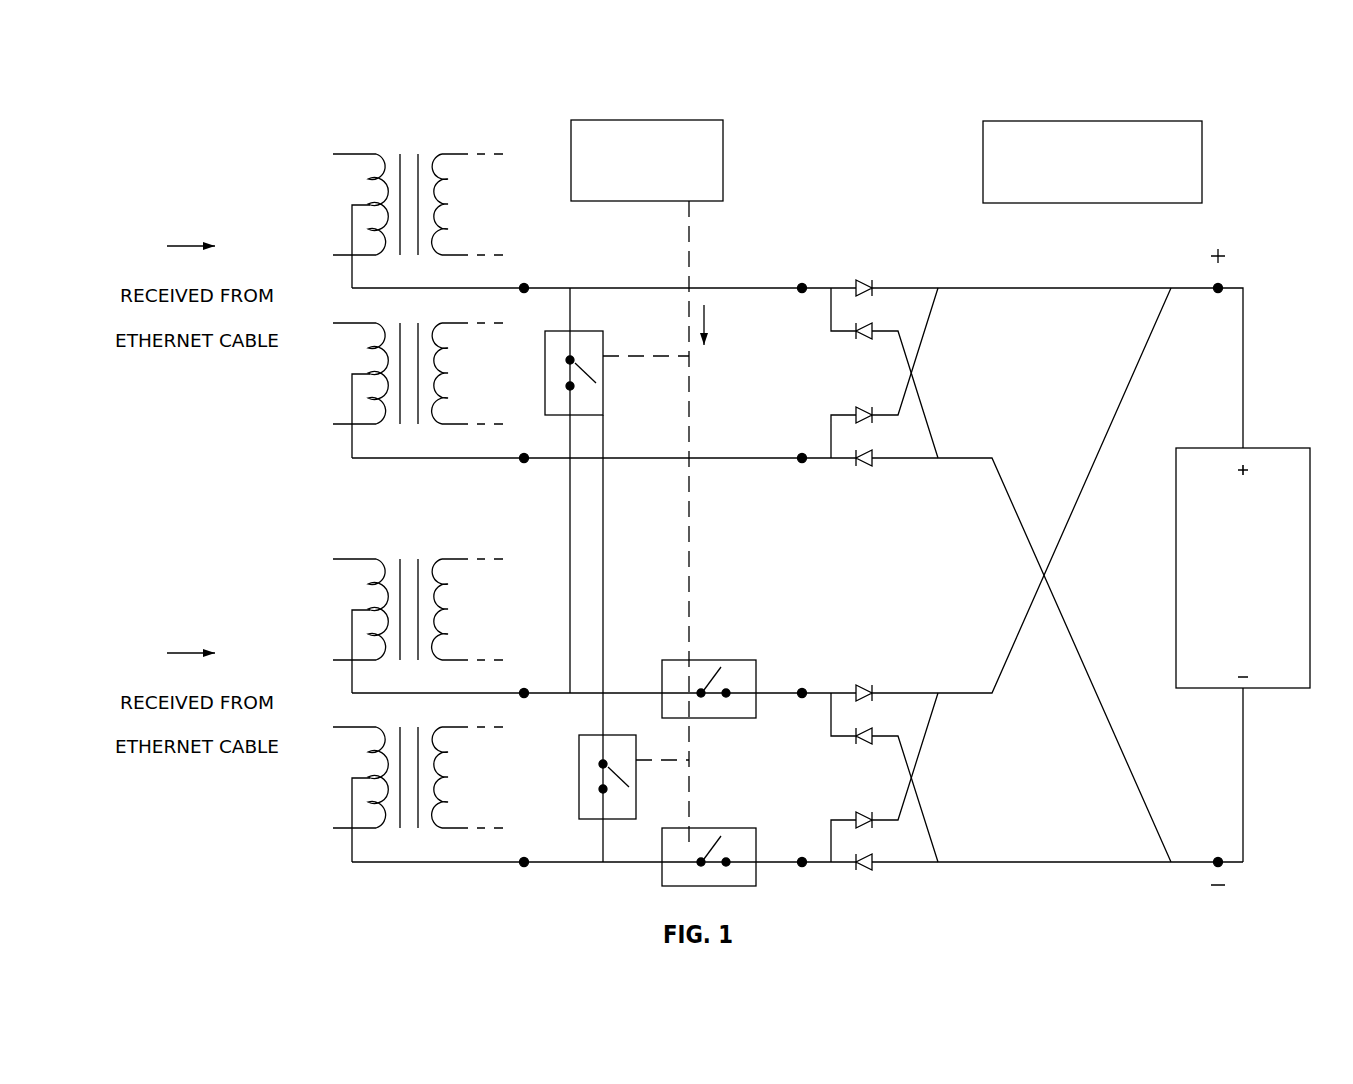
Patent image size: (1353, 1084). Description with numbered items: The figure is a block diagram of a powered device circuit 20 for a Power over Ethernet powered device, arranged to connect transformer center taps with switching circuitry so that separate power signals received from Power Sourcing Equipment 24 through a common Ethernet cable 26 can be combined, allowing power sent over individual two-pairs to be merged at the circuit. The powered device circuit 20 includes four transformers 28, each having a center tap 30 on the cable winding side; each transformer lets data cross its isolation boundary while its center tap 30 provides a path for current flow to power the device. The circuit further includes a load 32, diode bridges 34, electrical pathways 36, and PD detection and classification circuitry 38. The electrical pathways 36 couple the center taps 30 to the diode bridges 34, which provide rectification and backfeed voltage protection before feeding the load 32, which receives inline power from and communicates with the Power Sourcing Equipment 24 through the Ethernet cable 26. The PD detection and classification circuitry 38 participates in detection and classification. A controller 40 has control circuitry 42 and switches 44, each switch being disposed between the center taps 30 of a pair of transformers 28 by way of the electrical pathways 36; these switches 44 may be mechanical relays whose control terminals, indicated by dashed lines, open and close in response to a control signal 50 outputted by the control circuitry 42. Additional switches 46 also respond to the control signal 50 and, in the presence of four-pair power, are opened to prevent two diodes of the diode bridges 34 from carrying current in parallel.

The powered device circuit 20 is at (1237, 120).
The Power Sourcing Equipment 24 is at (197, 522).
The Ethernet cable 26 is at (197, 566).
The transformers 28 is at (437, 137).
The center tap 30 is at (357, 203).
The load 32 is at (1243, 568).
The diode bridges 34 is at (925, 168).
The electrical pathways 36 is at (792, 237).
The PD detection and classification circuitry 38 is at (1092, 162).
The controller 40 is at (740, 152).
The control circuitry 42 is at (647, 160).
The switches 44 is at (605, 272).
The switches 46 is at (757, 600).
The control signal 50 is at (708, 322).